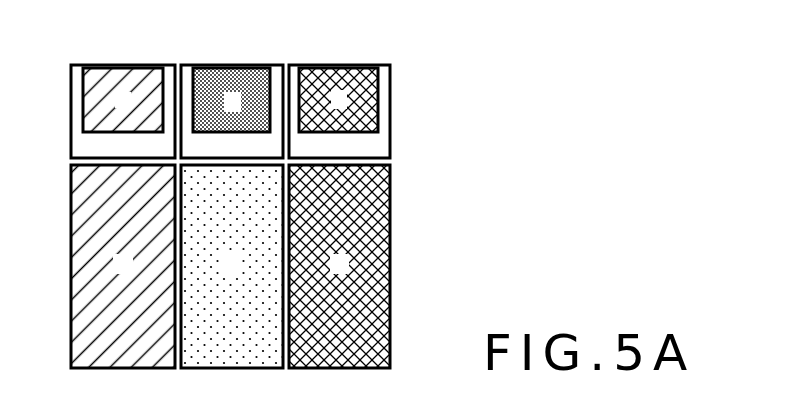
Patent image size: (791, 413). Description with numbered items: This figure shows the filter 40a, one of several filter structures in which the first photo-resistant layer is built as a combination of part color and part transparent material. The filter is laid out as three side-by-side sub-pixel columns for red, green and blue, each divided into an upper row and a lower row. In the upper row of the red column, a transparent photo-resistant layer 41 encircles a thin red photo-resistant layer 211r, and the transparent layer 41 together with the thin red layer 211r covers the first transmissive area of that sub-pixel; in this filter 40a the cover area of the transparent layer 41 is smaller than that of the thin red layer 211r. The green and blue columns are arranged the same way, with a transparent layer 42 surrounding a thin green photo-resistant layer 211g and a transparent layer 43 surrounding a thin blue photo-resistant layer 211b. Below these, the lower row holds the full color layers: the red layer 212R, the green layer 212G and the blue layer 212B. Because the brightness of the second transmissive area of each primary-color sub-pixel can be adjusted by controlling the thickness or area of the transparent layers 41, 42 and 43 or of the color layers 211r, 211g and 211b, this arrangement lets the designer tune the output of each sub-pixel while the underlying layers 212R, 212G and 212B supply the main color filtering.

The filter 40a is at (463, 91).
The transparent photo-resistant layer 41 is at (71, 143).
The transparent layer 42 is at (255, 143).
The transparent layer 43 is at (382, 142).
The thin red photo-resistant layer 211r is at (113, 64).
The thin green photo-resistant layer 211g is at (225, 64).
The thin blue photo-resistant layer 211b is at (330, 64).
The red layer 212R is at (113, 370).
The green layer 212G is at (226, 370).
The blue layer 212B is at (332, 370).